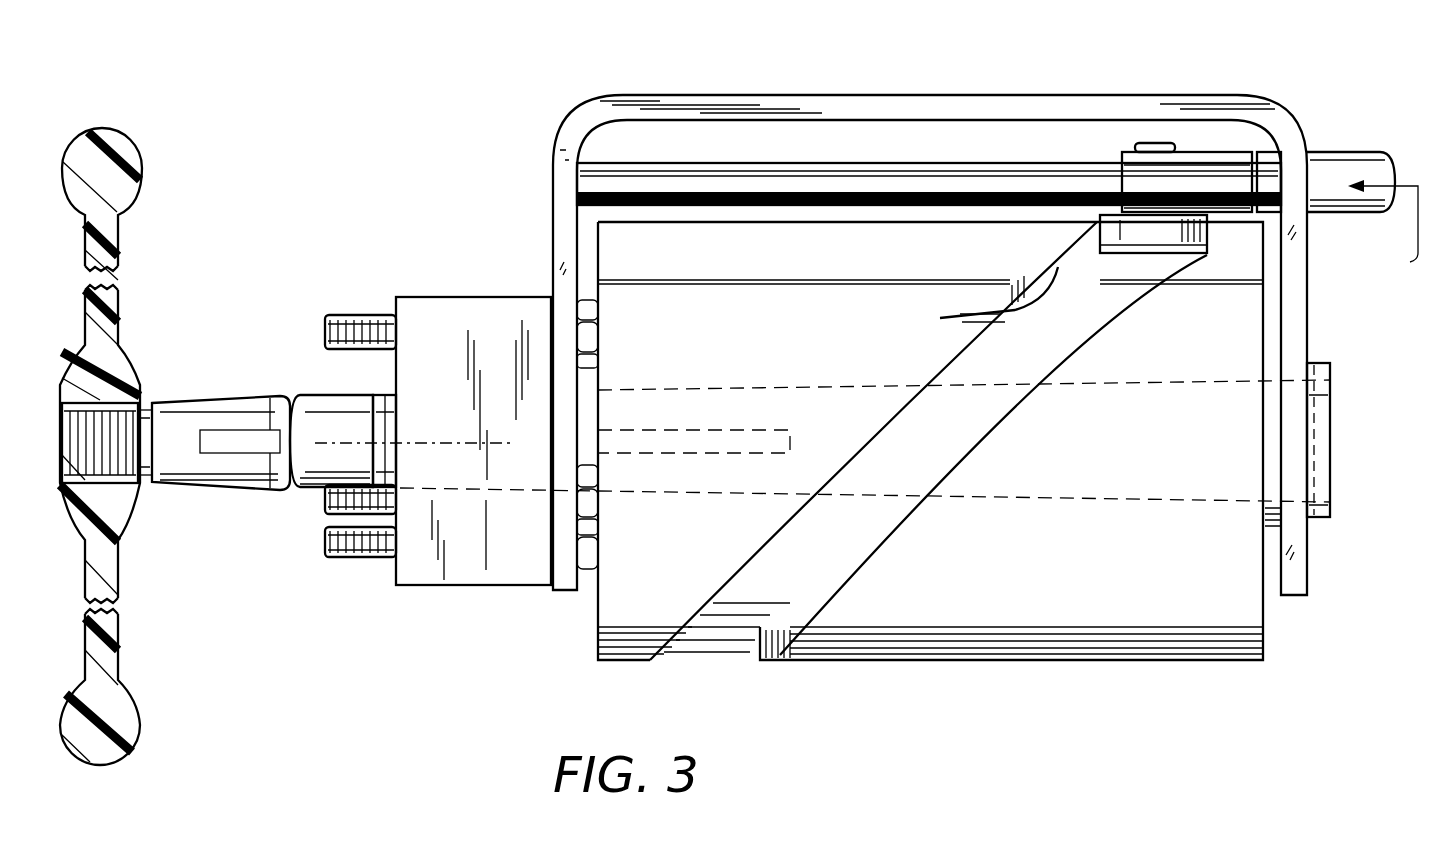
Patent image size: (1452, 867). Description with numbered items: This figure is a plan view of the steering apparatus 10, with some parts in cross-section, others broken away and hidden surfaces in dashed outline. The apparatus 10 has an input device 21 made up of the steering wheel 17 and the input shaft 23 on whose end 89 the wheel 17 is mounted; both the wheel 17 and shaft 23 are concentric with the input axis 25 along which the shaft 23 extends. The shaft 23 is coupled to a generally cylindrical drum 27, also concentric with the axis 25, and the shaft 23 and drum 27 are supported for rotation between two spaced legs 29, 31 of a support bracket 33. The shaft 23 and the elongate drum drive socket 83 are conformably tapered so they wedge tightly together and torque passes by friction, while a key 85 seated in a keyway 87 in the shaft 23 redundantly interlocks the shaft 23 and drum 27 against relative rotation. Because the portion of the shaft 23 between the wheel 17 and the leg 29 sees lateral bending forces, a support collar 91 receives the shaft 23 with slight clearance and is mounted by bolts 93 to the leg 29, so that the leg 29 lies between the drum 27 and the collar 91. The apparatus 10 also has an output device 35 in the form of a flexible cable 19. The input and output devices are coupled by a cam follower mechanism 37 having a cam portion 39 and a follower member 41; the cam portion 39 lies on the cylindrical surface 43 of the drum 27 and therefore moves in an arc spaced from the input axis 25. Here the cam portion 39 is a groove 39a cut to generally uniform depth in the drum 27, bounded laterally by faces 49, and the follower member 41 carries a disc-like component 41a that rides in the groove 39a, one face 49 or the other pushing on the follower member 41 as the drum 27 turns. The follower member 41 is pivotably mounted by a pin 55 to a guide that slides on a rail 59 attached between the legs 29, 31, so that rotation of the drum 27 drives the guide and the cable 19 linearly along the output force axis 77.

The steering apparatus 10 is at (524, 113).
The steering wheel 17 is at (140, 152).
The cable 19 is at (1352, 157).
The input device 21 is at (331, 215).
The input shaft 23 is at (178, 486).
The input axis 25 is at (333, 443).
The drum 27 is at (1132, 668).
The bracket leg 29 is at (553, 268).
The bracket leg 31 is at (1308, 314).
The support bracket 33 is at (936, 315).
The output device 35 is at (1323, 112).
The cam follower mechanism 37 is at (822, 473).
The cam portion 39 is at (928, 470).
The groove 39a is at (1040, 340).
The follower member 41 is at (1130, 126).
The component 41a is at (1143, 238).
The cylindrical surface 43 is at (955, 620).
The faces 49 is at (990, 314).
The pin 55 is at (1152, 95).
The rail 59 is at (668, 163).
The output force axis 77 is at (1383, 229).
The drum drive socket 83 is at (752, 392).
The key 85 is at (712, 445).
The keyway 87 is at (770, 430).
The end 89 is at (152, 400).
The support collar 91 is at (490, 590).
The bolts 93 is at (360, 560).